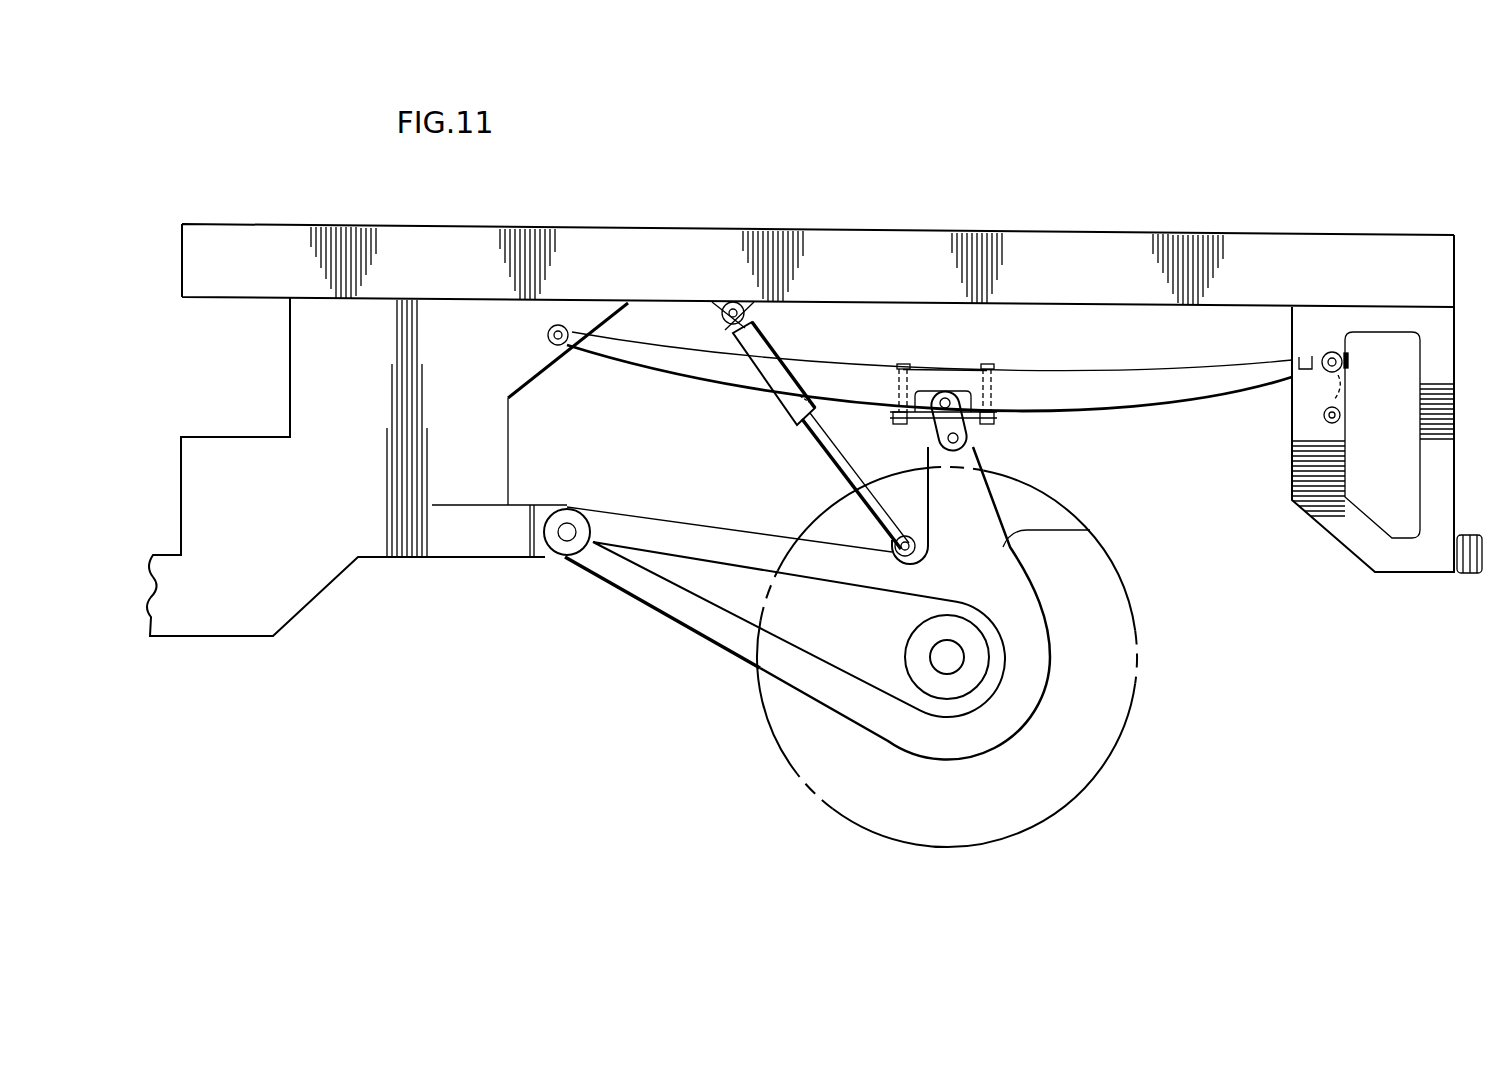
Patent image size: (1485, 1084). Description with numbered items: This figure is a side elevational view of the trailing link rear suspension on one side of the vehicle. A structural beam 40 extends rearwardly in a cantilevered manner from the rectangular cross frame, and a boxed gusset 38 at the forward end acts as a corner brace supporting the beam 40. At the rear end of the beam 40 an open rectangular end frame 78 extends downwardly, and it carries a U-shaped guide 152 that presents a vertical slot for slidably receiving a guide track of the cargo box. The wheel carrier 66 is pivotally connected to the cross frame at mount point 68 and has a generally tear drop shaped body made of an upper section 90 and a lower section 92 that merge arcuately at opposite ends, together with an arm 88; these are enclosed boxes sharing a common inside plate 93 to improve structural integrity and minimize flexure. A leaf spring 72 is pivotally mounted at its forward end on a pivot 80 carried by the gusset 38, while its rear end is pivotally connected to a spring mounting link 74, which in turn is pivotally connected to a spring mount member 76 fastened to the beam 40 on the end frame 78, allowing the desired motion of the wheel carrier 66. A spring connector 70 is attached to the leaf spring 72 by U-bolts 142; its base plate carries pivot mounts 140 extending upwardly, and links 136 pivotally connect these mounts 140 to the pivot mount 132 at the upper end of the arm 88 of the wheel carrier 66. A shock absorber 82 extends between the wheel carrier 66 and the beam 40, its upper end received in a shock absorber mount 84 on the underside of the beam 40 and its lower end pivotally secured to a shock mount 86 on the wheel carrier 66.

The gusset 38 is at (290, 377).
The beam 40 is at (1242, 234).
The wheel carrier 66 is at (675, 632).
The mount point 68 is at (545, 557).
The spring connector 70 is at (1000, 423).
The leaf spring 72 is at (1213, 382).
The spring mounting link 74 is at (1362, 382).
The spring mount member 76 is at (1343, 420).
The open rectangular end frame 78 is at (1315, 525).
The pivot 80 is at (560, 354).
The shock absorber 82 is at (780, 352).
The shock absorber mount 84 is at (713, 319).
The shock mount 86 is at (885, 544).
The arm 88 is at (1090, 530).
The upper section 90 is at (672, 535).
The lower section 92 is at (630, 592).
The common inside plate 93 is at (742, 590).
The pivot mount 132 is at (960, 448).
The link 136 is at (923, 428).
The pivot mount 140 is at (971, 368).
The U-bolt 142 is at (908, 365).
The guide 152 is at (1478, 575).